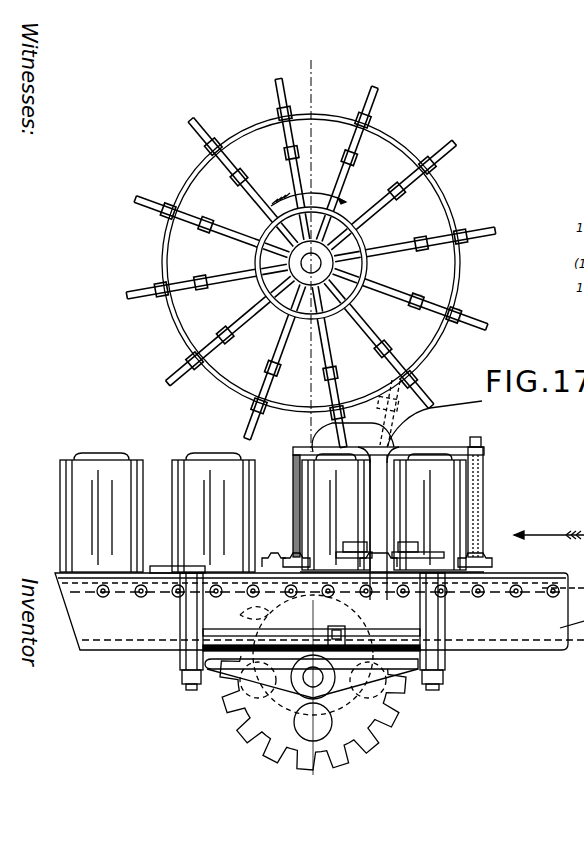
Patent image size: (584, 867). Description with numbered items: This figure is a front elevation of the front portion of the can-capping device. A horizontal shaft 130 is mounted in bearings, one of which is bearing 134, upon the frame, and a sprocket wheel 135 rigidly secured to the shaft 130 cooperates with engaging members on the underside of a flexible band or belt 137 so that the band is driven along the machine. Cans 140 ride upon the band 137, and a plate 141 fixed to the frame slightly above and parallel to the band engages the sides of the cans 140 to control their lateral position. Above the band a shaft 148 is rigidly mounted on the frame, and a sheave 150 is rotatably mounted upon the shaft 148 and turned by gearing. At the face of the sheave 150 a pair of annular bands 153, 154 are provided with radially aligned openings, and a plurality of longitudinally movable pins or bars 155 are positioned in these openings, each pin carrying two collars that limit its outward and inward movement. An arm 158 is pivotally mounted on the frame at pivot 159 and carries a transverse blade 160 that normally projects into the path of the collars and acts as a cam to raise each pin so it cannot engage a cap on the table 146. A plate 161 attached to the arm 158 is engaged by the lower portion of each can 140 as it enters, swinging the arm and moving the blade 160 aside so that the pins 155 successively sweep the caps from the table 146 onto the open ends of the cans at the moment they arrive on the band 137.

The horizontal shaft 130 is at (313, 677).
The bearing 134 is at (313, 678).
The sprocket wheel 135 is at (377, 716).
The flexible band or belt 137 is at (513, 575).
The cans 140 is at (290, 462).
The plate 141 is at (167, 566).
The table 146 is at (485, 457).
The shaft 148 is at (322, 256).
The sheave 150 is at (430, 203).
The annular band 153 is at (367, 266).
The annular band 154 is at (460, 297).
The pins or bars 155 is at (490, 325).
The arm 158 is at (446, 650).
The pivot 159 is at (240, 662).
The transverse blade 160 is at (432, 421).
The plate 161 is at (437, 546).